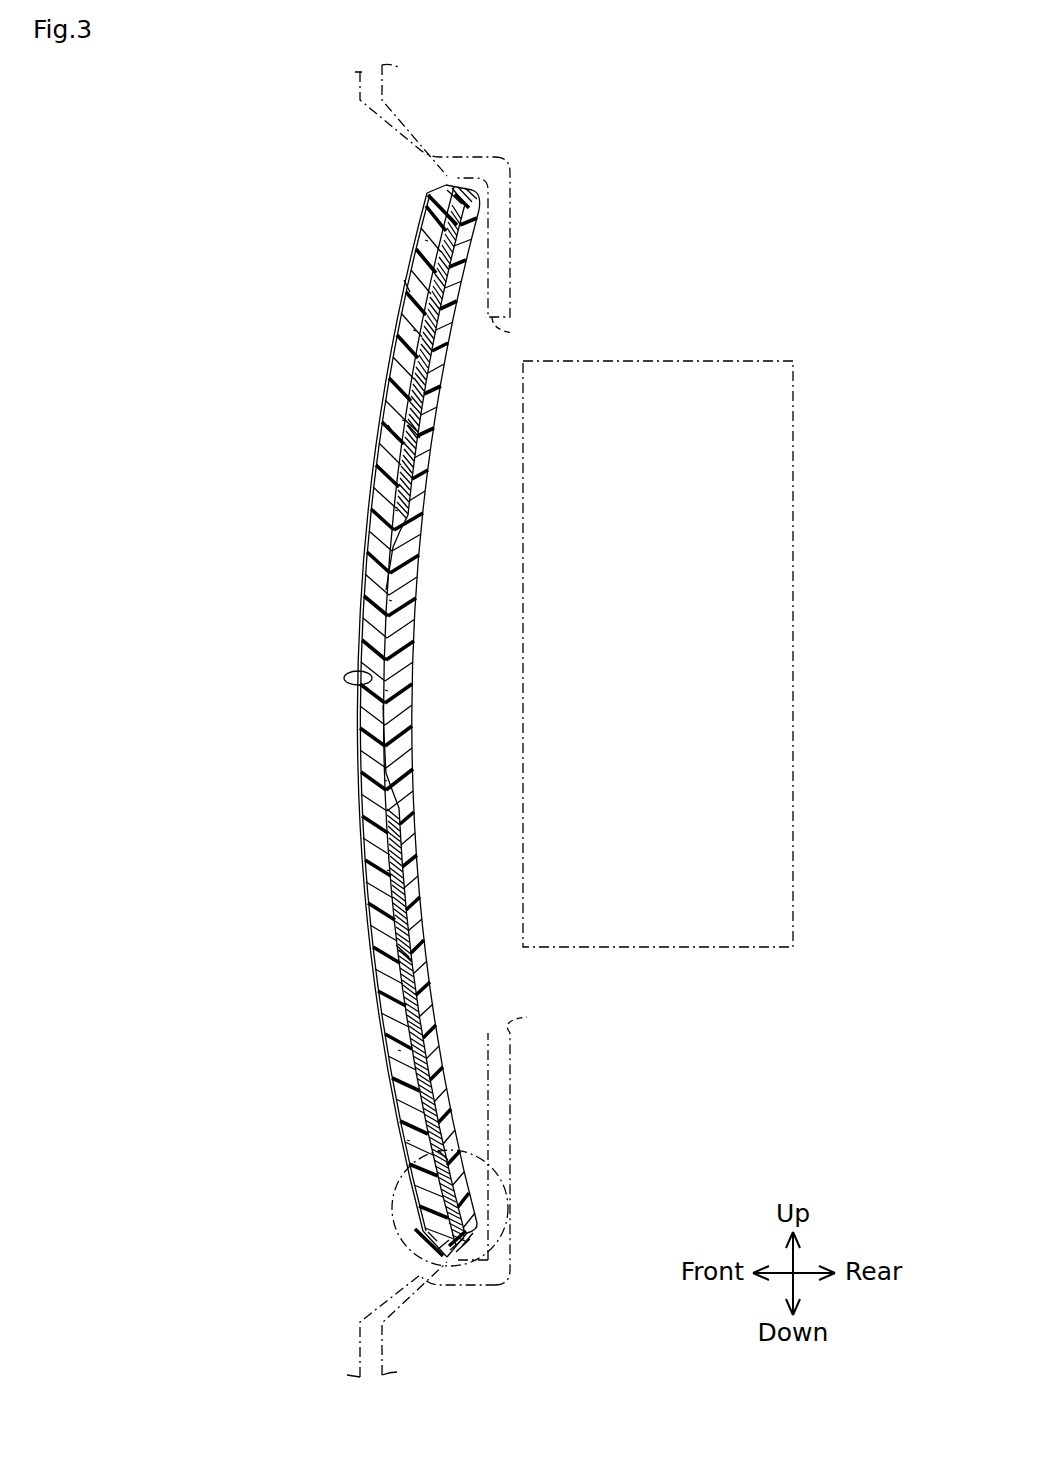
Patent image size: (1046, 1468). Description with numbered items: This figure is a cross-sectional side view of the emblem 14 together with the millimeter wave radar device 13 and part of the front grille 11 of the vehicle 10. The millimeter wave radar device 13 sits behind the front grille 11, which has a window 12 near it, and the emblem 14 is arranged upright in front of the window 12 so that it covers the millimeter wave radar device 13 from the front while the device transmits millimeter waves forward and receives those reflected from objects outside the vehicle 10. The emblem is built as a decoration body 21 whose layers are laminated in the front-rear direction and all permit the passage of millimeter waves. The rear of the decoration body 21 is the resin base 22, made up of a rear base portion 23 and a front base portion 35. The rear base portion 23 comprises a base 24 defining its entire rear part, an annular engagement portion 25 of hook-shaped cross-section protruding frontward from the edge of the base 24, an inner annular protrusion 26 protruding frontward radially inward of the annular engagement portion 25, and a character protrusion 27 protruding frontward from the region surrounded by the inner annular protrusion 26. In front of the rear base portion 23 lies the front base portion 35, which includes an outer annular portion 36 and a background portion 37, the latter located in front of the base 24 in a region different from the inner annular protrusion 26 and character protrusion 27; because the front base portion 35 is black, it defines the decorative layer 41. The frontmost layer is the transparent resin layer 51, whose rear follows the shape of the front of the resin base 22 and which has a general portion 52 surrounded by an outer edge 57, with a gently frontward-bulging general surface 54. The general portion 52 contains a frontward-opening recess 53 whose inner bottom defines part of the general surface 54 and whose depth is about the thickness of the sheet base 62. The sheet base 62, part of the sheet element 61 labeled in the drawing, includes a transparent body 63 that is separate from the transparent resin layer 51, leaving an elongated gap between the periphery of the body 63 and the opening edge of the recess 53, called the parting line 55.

The vehicle 10 is at (174, 174).
The front grille 11 is at (358, 97).
The window 12 is at (520, 334).
The millimeter wave radar device 13 is at (718, 948).
The emblem 14 is at (379, 722).
The decoration body 21 is at (476, 545).
The resin base 22 is at (408, 607).
The rear base portion 23 is at (446, 719).
The base 24 is at (406, 857).
The annular engagement portion 25 is at (460, 188).
The inner annular protrusion 26 is at (407, 286).
The character protrusion 27 is at (386, 712).
The front base portion 35 is at (422, 733).
The outer annular portion 36 is at (441, 232).
The background portion 37 is at (420, 428).
The decorative layer 41 is at (422, 733).
The transparent resin layer 51 is at (392, 578).
The general portion 52 is at (394, 436).
The recess 53 is at (416, 698).
The general surface 54 is at (372, 678).
The parting line 55 is at (452, 221).
The outer edge 57 is at (436, 190).
The film layer 61 is at (334, 712).
The sheet base 62 is at (334, 712).
The body 63 is at (357, 833).